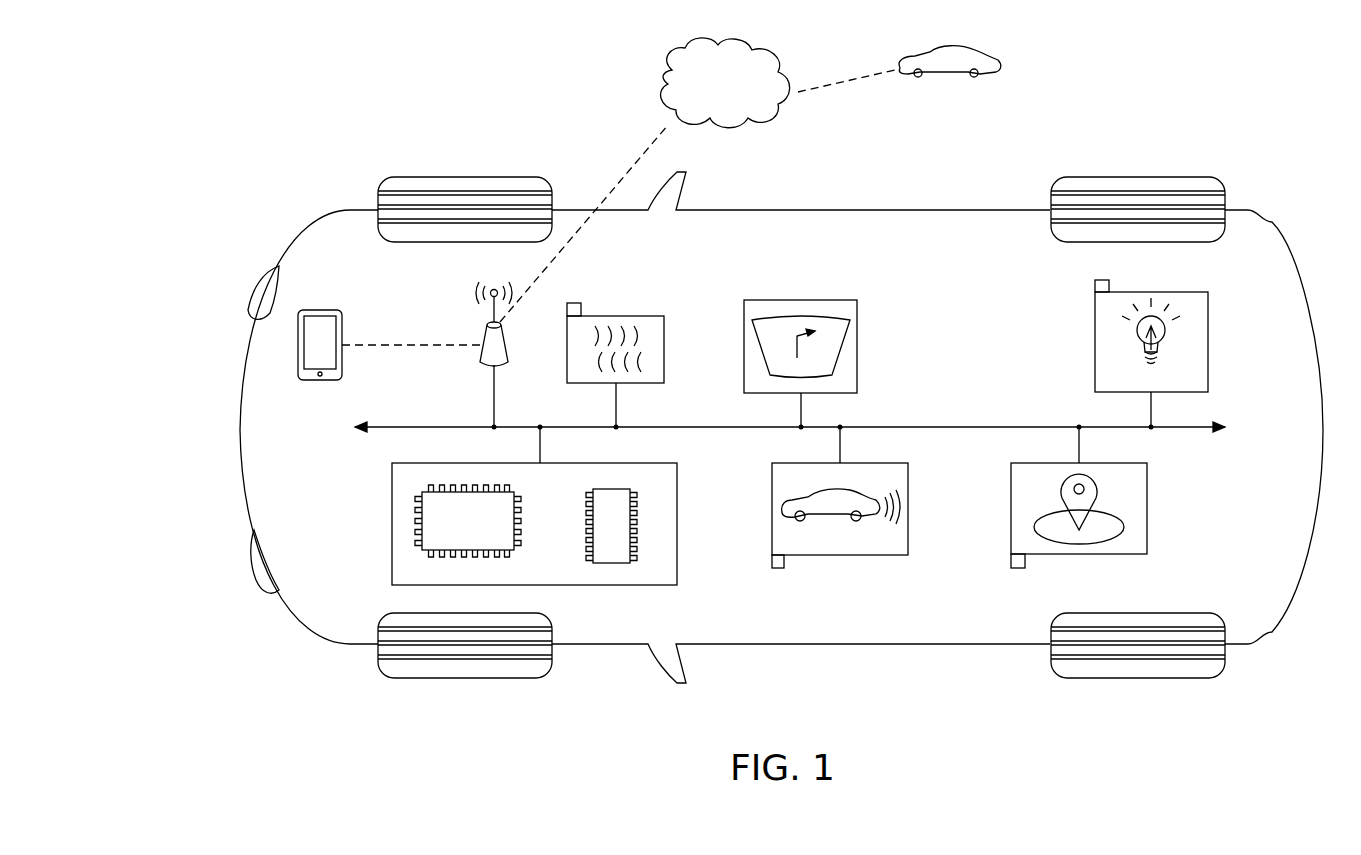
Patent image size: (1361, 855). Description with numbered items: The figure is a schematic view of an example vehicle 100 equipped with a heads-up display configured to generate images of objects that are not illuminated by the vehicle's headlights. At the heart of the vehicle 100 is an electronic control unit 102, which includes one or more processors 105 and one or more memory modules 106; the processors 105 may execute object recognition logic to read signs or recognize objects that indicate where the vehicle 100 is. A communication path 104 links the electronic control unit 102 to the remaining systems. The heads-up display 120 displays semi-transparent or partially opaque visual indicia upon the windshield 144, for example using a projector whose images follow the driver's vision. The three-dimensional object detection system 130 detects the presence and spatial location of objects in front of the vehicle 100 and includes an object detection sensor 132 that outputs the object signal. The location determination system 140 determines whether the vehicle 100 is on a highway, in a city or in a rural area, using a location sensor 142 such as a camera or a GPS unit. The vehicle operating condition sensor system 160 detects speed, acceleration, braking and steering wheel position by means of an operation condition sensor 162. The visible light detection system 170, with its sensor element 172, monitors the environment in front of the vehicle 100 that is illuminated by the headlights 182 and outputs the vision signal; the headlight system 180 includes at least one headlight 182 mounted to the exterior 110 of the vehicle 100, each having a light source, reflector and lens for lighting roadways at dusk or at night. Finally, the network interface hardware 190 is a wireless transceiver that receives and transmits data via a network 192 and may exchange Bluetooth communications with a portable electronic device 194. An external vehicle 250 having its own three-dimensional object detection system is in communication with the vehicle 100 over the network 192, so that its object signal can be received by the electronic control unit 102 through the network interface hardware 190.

The vehicle 100 is at (1152, 162).
The electronic control unit 102 is at (677, 521).
The communication path 104 is at (428, 422).
The processors 105 is at (505, 545).
The memory modules 106 is at (590, 493).
The exterior 110 is at (880, 207).
The heads-up display 120 is at (797, 300).
The three-dimensional object detection system 130 is at (664, 347).
The object detection sensor 132 is at (577, 303).
The location determination system 140 is at (1147, 508).
The location sensor 142 is at (1018, 568).
The windshield 144 is at (845, 345).
The vehicle operating condition sensor system 160 is at (908, 508).
The operation condition sensor 162 is at (778, 568).
The visible light detection system 170 is at (1208, 346).
The lighting connector 172 is at (1105, 280).
The headlight system 180 is at (205, 212).
The headlight 182 is at (252, 305).
The network interface hardware 190 is at (483, 332).
The network 192 is at (650, 82).
The portable electronic device 194 is at (342, 324).
The external vehicle 250 is at (992, 64).